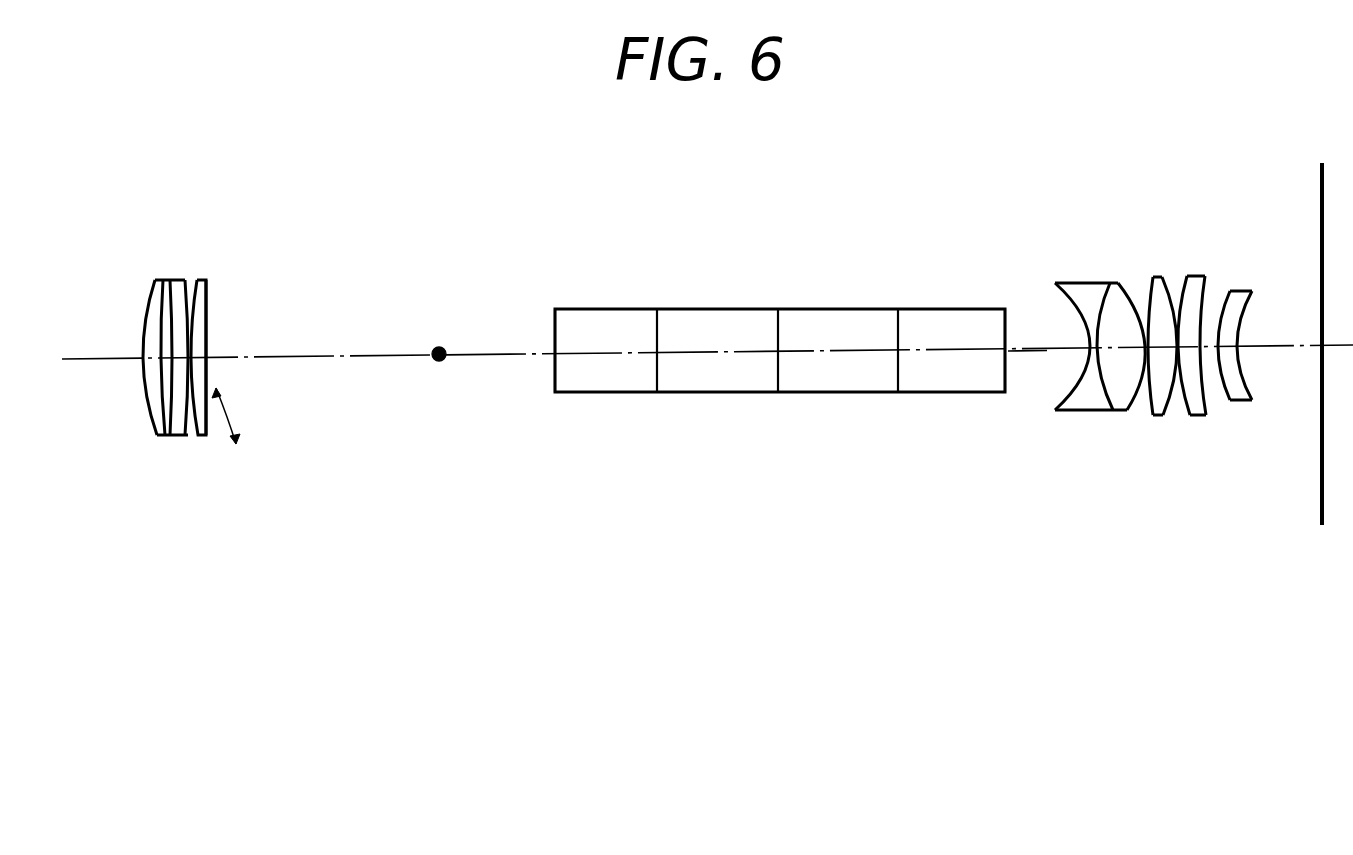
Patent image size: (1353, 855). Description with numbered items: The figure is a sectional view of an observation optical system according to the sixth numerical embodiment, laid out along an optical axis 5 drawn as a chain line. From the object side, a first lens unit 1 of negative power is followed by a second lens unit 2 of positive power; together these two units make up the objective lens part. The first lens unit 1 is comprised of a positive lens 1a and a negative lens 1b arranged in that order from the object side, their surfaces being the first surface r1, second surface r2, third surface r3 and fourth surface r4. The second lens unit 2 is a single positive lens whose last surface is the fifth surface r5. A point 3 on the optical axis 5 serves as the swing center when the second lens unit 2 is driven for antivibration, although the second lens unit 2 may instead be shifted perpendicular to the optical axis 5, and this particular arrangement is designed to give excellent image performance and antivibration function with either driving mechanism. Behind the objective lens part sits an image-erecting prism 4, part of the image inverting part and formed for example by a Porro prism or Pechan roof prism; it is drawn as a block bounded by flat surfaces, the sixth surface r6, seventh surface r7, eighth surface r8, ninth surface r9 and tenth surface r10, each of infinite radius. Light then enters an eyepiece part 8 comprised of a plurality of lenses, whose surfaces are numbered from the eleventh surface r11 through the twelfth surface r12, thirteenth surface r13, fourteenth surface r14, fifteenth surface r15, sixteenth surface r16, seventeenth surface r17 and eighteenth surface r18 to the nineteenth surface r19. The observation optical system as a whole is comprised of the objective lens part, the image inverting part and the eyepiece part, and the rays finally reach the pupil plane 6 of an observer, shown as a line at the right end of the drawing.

The first lens unit 1 is at (153, 375).
The positive lens 1a is at (130, 327).
The negative lens 1b is at (153, 335).
The second lens unit 2 is at (228, 415).
The point 3 is at (440, 362).
The image-erecting prism 4 is at (744, 351).
The optical axis 5 is at (1030, 349).
The pupil plane 6 is at (1322, 470).
The eyepiece part 8 is at (1160, 310).
The first surface r1 is at (148, 302).
The second surface r2 is at (157, 288).
The third surface r3 is at (172, 280).
The fourth surface r4 is at (190, 280).
The fifth surface r5 is at (207, 295).
The sixth surface r6 is at (553, 328).
The seventh surface r7 is at (657, 330).
The eighth surface r8 is at (778, 330).
The ninth surface r9 is at (898, 330).
The tenth surface r10 is at (972, 316).
The eleventh surface r11 is at (1052, 300).
The twelfth surface r12 is at (1080, 283).
The thirteenth surface r13 is at (1128, 283).
The fourteenth surface r14 is at (1152, 283).
The fifteenth surface r15 is at (1172, 283).
The sixteenth surface r16 is at (1185, 287).
The seventeenth surface r17 is at (1223, 287).
The eighteenth surface r18 is at (1230, 290).
The nineteenth surface r19 is at (1260, 297).